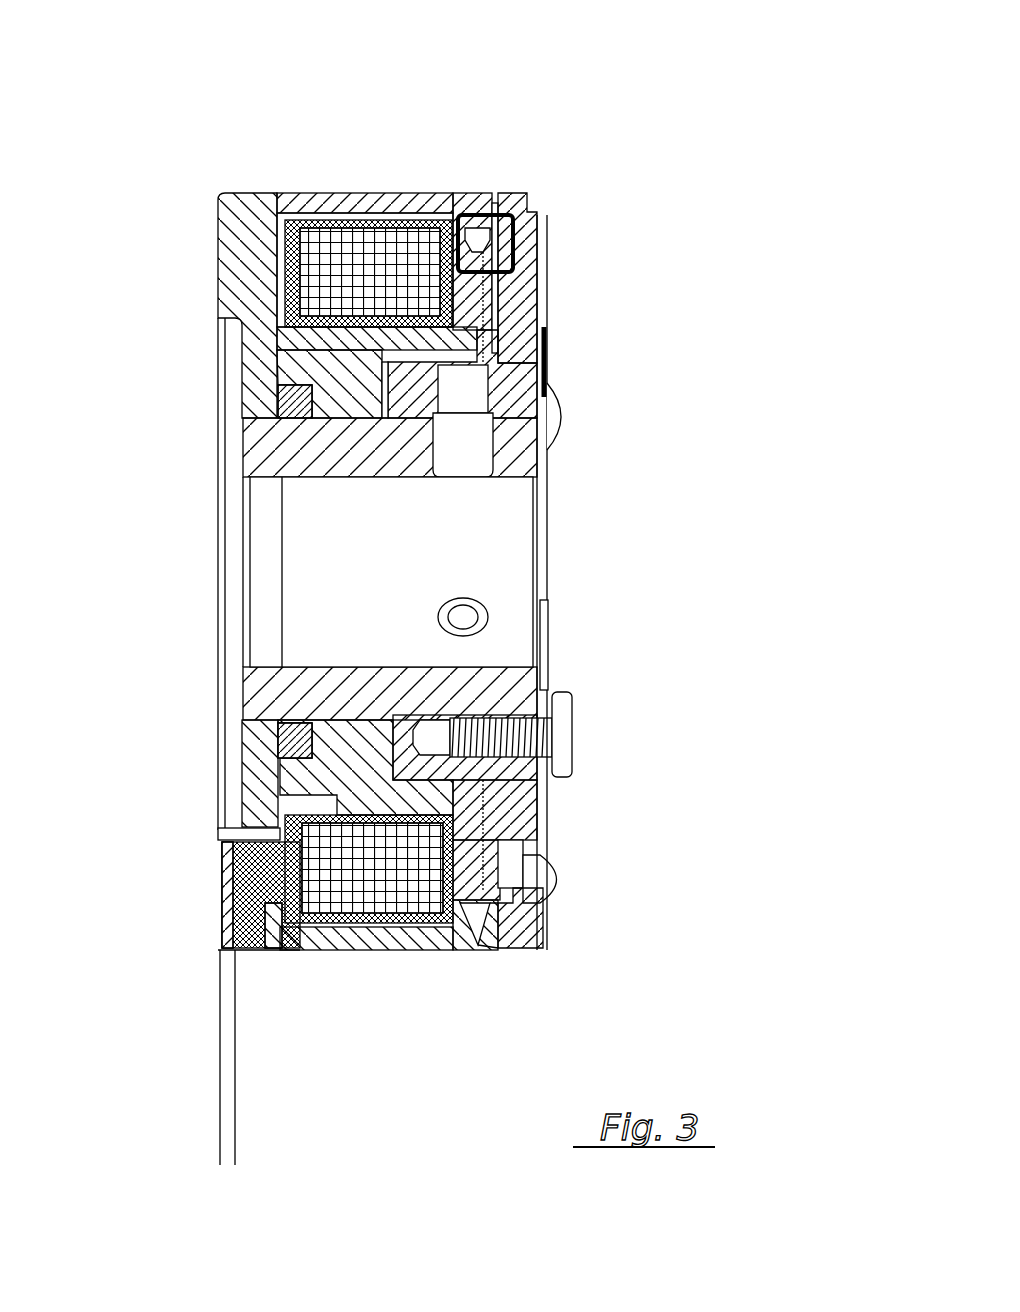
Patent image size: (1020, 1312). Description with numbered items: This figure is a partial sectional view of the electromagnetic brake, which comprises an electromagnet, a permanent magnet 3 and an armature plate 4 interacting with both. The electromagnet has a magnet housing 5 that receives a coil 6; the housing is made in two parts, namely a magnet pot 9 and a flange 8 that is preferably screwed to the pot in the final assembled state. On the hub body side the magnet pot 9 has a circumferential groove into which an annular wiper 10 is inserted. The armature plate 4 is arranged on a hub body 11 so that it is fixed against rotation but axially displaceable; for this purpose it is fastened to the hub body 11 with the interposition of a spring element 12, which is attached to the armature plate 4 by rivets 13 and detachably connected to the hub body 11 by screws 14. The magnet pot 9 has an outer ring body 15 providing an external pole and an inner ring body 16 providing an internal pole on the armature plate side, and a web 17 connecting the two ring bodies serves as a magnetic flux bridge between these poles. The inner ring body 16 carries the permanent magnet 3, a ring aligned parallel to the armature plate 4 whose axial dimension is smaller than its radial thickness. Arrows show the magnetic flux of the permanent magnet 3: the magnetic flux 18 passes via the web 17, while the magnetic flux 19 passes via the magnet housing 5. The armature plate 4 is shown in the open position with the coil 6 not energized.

The permanent magnet 3 is at (497, 832).
The armature plate 4 is at (525, 927).
The magnet housing 5 is at (325, 200).
The coil 6 is at (377, 260).
The flange 8 is at (230, 253).
The magnet pot 9 is at (452, 193).
The annular wiper 10 is at (290, 405).
The hub body 11 is at (505, 551).
The spring element 12 is at (545, 910).
The rivets 13 is at (557, 865).
The screws 14 is at (560, 727).
The outer ring body 15 is at (477, 938).
The inner ring body 16 is at (470, 807).
The web 17 is at (457, 908).
The magnetic flux 18 is at (540, 207).
The magnetic flux 19 is at (528, 268).